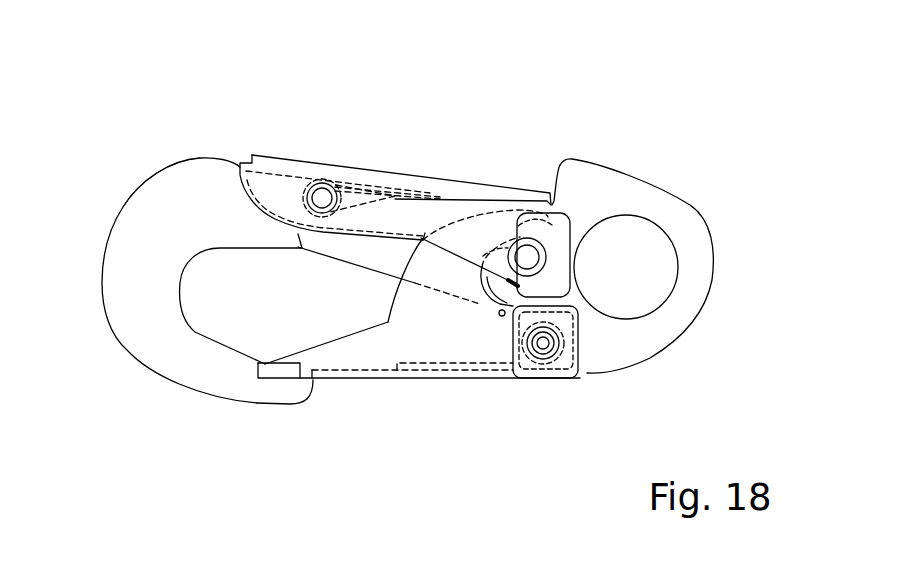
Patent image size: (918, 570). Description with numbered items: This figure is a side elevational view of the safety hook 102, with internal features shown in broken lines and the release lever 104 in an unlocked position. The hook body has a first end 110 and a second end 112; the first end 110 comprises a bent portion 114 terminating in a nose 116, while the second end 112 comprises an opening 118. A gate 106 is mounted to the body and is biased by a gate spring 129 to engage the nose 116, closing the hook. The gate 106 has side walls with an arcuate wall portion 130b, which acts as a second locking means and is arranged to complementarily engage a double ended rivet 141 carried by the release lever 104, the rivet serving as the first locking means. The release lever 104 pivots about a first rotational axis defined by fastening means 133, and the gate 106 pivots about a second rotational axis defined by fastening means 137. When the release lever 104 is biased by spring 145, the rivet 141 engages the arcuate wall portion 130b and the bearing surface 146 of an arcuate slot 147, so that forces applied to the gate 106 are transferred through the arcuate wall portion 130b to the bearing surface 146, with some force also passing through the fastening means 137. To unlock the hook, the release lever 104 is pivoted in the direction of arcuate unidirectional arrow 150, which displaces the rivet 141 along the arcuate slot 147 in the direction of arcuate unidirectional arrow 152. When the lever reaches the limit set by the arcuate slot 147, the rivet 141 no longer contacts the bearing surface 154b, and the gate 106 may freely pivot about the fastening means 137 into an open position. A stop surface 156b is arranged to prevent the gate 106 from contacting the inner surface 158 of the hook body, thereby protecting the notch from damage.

The safety hook 102 is at (624, 116).
The release lever 104 is at (389, 165).
The gate 106 is at (358, 393).
The first end 110 is at (97, 320).
The second end 112 is at (716, 313).
The bent portion 114 is at (127, 267).
The nose 116 is at (289, 413).
The opening 118 is at (630, 283).
The gate spring 129 is at (430, 373).
The arcuate wall portion 130b is at (423, 320).
The fastening means 133 is at (322, 192).
The fastening means 137 is at (545, 350).
The double ended rivet 141 is at (550, 254).
The spring 145 is at (420, 187).
The bearing surface 146 is at (553, 237).
The arcuate slot 147 is at (548, 231).
The arcuate unidirectional arrow 150 is at (526, 166).
The arcuate unidirectional arrow 152 is at (545, 279).
The bearing surface 154b is at (558, 201).
The stop surface 156b is at (507, 290).
The inner surface 158 is at (241, 249).